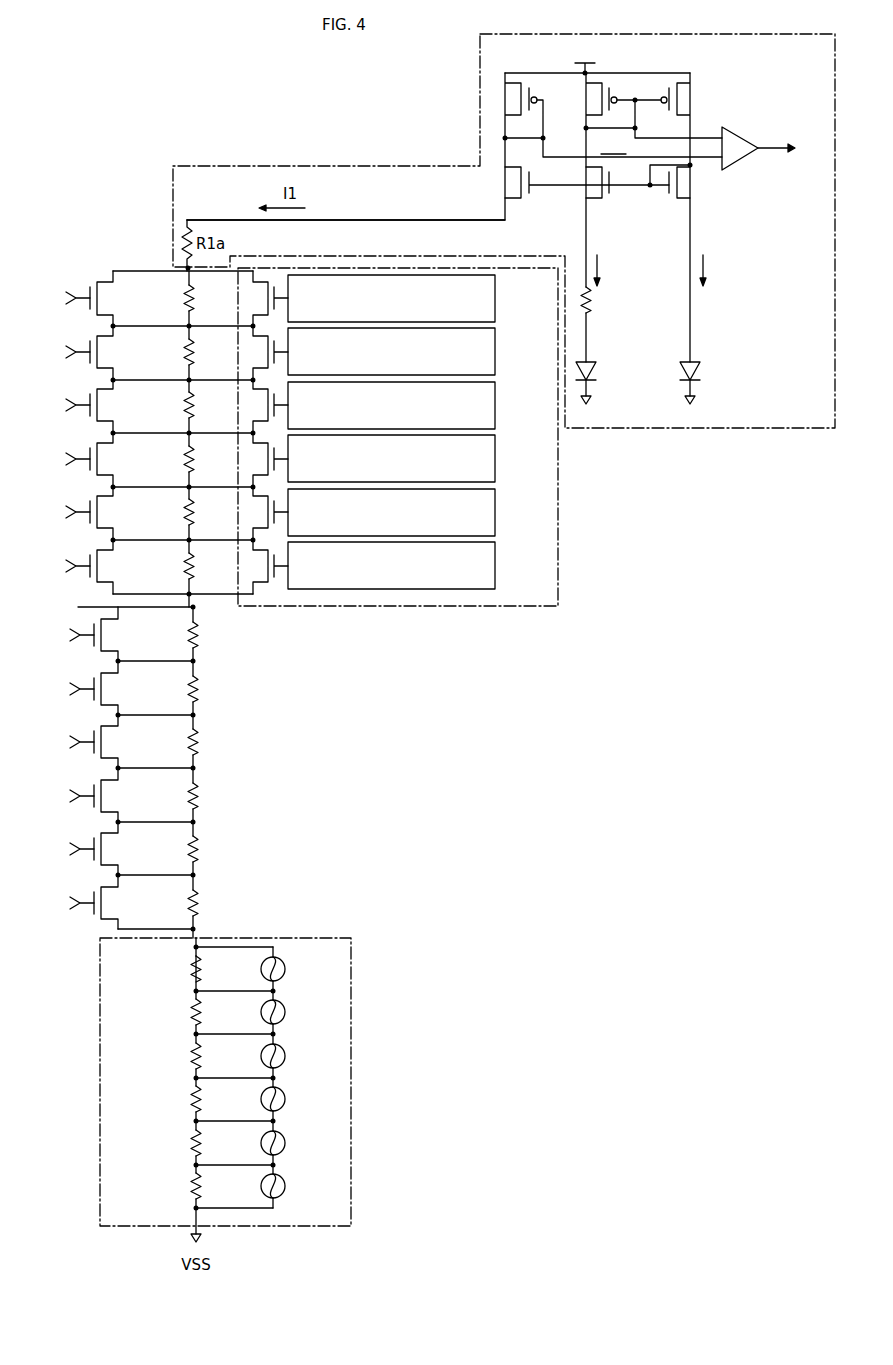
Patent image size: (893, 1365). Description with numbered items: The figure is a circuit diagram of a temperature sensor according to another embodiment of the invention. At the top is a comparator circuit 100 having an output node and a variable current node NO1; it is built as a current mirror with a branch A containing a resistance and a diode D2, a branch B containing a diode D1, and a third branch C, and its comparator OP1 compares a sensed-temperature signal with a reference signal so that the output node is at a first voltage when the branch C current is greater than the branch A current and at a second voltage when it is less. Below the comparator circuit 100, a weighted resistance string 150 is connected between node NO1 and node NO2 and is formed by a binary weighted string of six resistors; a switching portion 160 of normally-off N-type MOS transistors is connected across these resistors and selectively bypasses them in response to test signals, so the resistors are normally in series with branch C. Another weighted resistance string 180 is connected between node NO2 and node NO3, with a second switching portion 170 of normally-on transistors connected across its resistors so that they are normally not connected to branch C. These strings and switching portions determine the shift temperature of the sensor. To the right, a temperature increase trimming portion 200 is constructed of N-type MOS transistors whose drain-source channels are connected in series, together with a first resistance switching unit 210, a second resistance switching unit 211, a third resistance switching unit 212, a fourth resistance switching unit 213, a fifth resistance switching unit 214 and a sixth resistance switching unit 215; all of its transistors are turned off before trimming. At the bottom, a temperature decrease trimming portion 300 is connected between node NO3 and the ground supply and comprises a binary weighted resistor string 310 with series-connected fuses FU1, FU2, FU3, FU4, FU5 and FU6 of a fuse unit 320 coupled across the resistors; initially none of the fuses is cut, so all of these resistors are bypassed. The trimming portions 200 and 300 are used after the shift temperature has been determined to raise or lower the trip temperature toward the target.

The comparator circuit 100 is at (478, 130).
The weighted resistance string 150 is at (232, 617).
The switching portion 160 is at (80, 437).
The switching portion 170 is at (92, 944).
The weighted resistance string 180 is at (250, 935).
The temperature increase trimming portion 200 is at (558, 542).
The first resistance switching unit 210 is at (417, 298).
The second resistance switching unit 211 is at (417, 351).
The third resistance switching unit 212 is at (417, 405).
The fourth resistance switching unit 213 is at (417, 458).
The fifth resistance switching unit 214 is at (417, 512).
The sixth resistance switching unit 215 is at (417, 565).
The temperature decrease trimming portion 300 is at (352, 1088).
The trimming resistor string RD1a-RD6a 310 is at (147, 1222).
The fuse unit FU1-FU6 320 is at (322, 1220).
The comparator OP1 is at (755, 130).
The diode D1 is at (696, 358).
The diode D2 is at (592, 358).
The branch A is at (592, 222).
The branch B is at (695, 222).
The branch C is at (388, 220).
The variable current node NO1 is at (183, 268).
The node NO2 is at (193, 592).
The node NO3 is at (197, 928).
The fuse FU1 is at (297, 1186).
The fuse FU2 is at (297, 1143).
The fuse FU3 is at (297, 1099).
The fuse FU4 is at (297, 1056).
The fuse FU5 is at (297, 1012).
The fuse FU6 is at (297, 969).